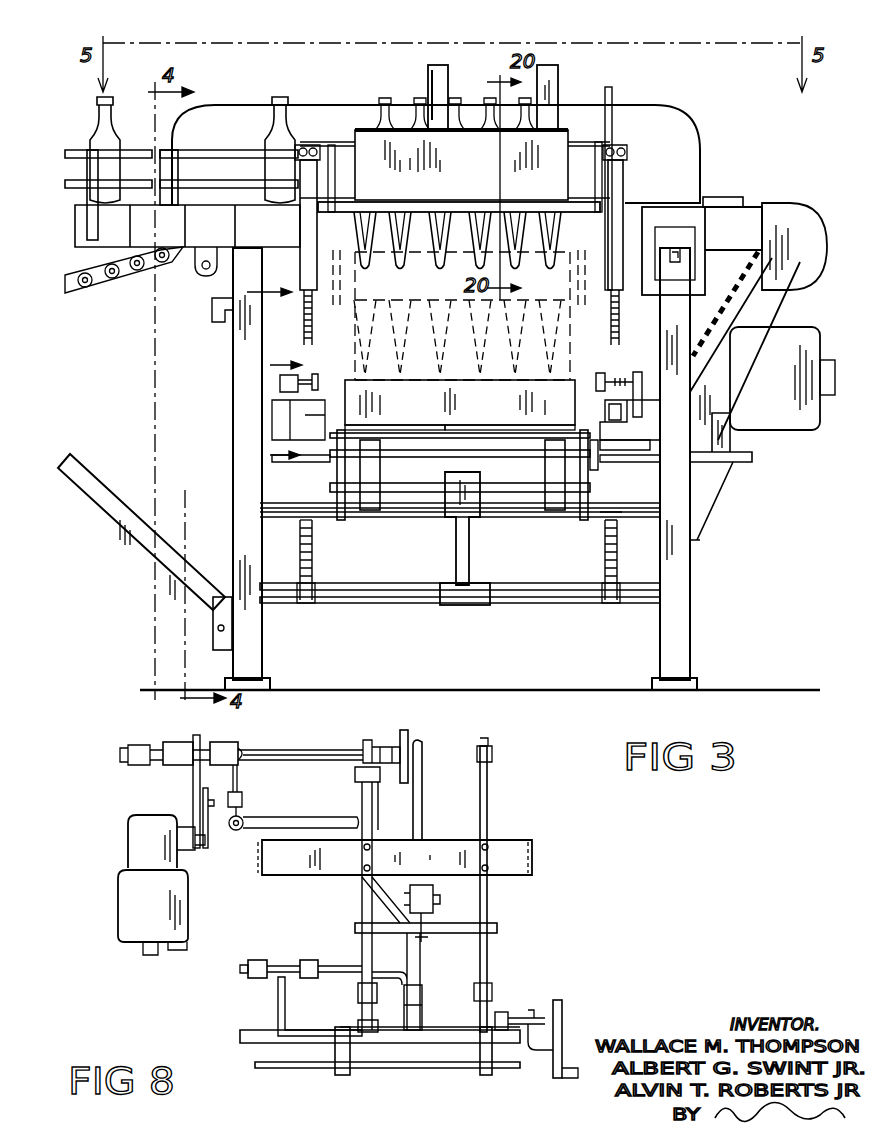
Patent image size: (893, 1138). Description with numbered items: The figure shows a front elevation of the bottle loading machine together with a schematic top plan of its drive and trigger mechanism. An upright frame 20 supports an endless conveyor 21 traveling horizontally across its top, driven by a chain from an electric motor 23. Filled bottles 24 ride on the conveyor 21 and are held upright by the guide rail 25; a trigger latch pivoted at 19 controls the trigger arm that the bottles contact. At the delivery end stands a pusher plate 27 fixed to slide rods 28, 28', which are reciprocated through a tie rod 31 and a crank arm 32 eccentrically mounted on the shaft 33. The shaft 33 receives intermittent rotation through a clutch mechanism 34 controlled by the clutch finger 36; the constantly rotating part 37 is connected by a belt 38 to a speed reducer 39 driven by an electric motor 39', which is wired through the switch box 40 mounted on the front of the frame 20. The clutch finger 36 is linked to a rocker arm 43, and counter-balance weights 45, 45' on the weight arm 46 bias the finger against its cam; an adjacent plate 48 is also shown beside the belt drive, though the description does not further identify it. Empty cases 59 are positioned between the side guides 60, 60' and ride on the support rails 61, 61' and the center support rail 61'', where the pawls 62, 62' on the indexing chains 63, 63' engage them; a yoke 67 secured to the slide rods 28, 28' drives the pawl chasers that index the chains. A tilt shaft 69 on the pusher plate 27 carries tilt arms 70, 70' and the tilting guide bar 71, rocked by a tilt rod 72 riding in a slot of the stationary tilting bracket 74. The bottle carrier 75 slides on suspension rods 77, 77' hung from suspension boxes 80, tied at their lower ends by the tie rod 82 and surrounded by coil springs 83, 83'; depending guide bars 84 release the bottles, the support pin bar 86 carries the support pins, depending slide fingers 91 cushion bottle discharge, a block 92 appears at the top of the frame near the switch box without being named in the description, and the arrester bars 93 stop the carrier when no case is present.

In FIG. 3, the pivot 19 is at (288, 132).
In FIG. 3, the upright frame 20 is at (233, 436).
In FIG. 3, the endless conveyor 21 is at (297, 407).
In FIG. 3, the electric motor 23 is at (786, 432).
In FIG. 3, the filled bottles 24 is at (113, 148).
In FIG. 3, the guide rail 25 is at (198, 150).
In FIG. 8, the pusher plate 27 is at (386, 1042).
In FIG. 8, the slide rod 28 is at (390, 907).
In FIG. 8, the slide rod 28' is at (501, 885).
In FIG. 8, the tie rod 31 is at (464, 935).
In FIG. 8, the crank arm 32 is at (422, 822).
In FIG. 8, the shaft 33 is at (298, 750).
In FIG. 8, the clutch mechanism 34 is at (228, 744).
In FIG. 8, the clutch finger 36 is at (242, 796).
In FIG. 8, the constantly rotating part of the clutch mechanism 37 is at (180, 734).
In FIG. 8, the belt 38 is at (193, 787).
In FIG. 8, the speed reducer 39 is at (145, 841).
In FIG. 8, the electric motor 39' is at (134, 912).
In FIG. 3, the switch box 40 is at (690, 248).
In FIG. 8, the rocker arm 43 is at (285, 820).
In FIG. 8, the counter-balance weight 45 is at (262, 954).
In FIG. 8, the counter-balance weight 45' is at (314, 954).
In FIG. 8, the weight arm 46 is at (338, 986).
In FIG. 8, the plate 48 is at (203, 808).
In FIG. 3, the empty cases 59 is at (436, 388).
In FIG. 3, the side guide 60 is at (510, 403).
In FIG. 3, the side guide 60' is at (395, 403).
In FIG. 3, the carton-case support rail 61 is at (460, 421).
In FIG. 3, the carton-case support rail 61' is at (460, 430).
In FIG. 3, the center support rail 61'' is at (460, 446).
In FIG. 3, the pawl 62 is at (559, 453).
In FIG. 3, the pawl 62' is at (374, 457).
In FIG. 3, the indexing chain 63 is at (625, 426).
In FIG. 3, the indexing chain 63' is at (301, 467).
In FIG. 8, the yoke 67 is at (322, 874).
In FIG. 8, the tilt shaft 69 is at (512, 1016).
In FIG. 3, the tilt arm 70 is at (453, 96).
In FIG. 8, the tilt arm 70 is at (324, 1051).
In FIG. 3, the tilt arm 70' is at (564, 96).
In FIG. 8, the tilt arm 70' is at (469, 1051).
In FIG. 8, the tilting guide bar 71 is at (372, 1070).
In FIG. 8, the tilt rod 72 is at (540, 1058).
In FIG. 3, the tilting bracket 74 is at (612, 93).
In FIG. 8, the tilting bracket 74 is at (562, 1038).
In FIG. 3, the bottle carrier 75 is at (355, 136).
In FIG. 3, the suspension rod 77 is at (594, 561).
In FIG. 3, the suspension rod 77' is at (323, 561).
In FIG. 3, the suspension box 80 is at (628, 152).
In FIG. 3, the tie rod 82 is at (350, 583).
In FIG. 3, the coil spring 83 is at (594, 527).
In FIG. 3, the coil spring 83' is at (324, 531).
In FIG. 3, the guide bar 84 is at (624, 200).
In FIG. 3, the support pin bar 86 is at (382, 204).
In FIG. 3, the slide fingers 91 is at (410, 262).
In FIG. 3, the block 92 is at (735, 197).
In FIG. 3, the bottle carrier arrester bar 93 is at (340, 325).